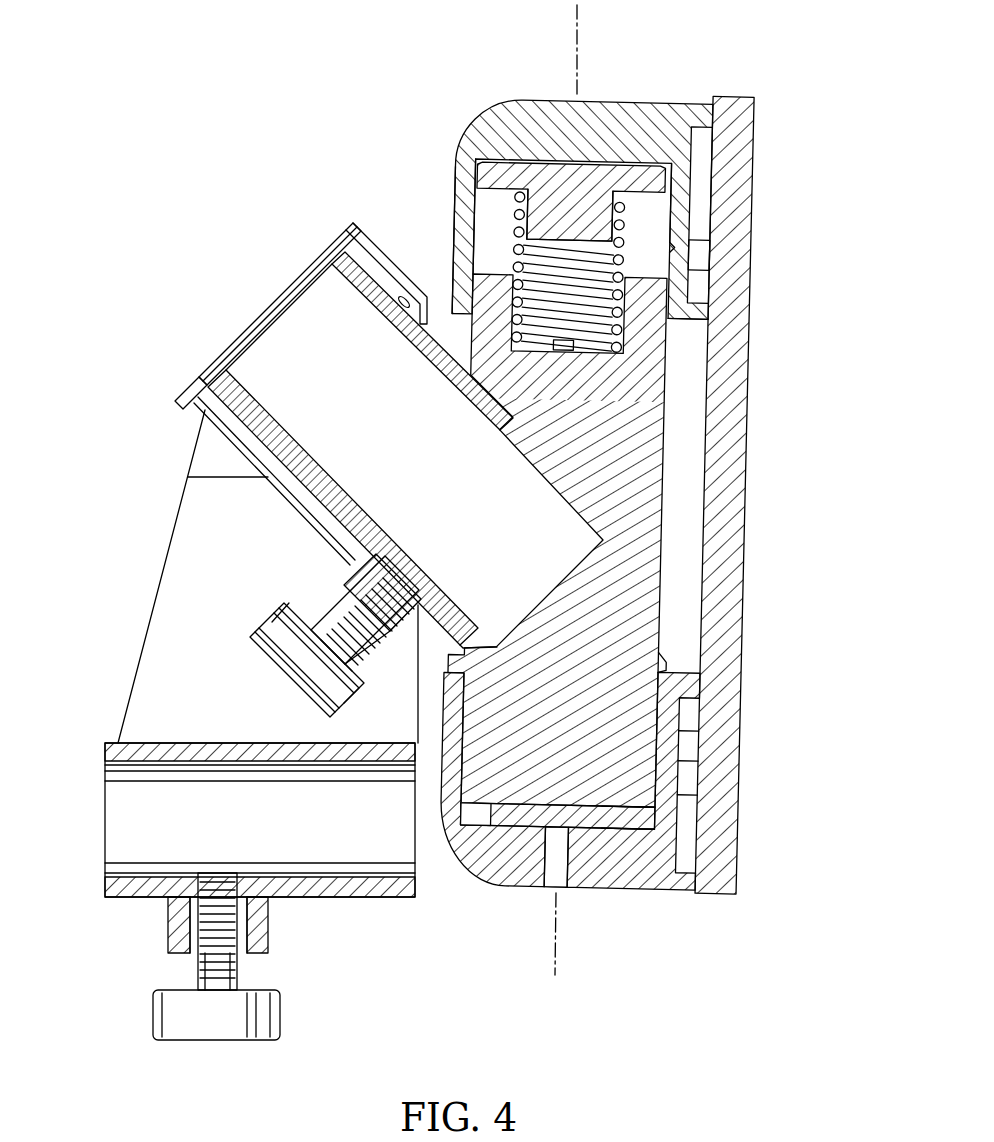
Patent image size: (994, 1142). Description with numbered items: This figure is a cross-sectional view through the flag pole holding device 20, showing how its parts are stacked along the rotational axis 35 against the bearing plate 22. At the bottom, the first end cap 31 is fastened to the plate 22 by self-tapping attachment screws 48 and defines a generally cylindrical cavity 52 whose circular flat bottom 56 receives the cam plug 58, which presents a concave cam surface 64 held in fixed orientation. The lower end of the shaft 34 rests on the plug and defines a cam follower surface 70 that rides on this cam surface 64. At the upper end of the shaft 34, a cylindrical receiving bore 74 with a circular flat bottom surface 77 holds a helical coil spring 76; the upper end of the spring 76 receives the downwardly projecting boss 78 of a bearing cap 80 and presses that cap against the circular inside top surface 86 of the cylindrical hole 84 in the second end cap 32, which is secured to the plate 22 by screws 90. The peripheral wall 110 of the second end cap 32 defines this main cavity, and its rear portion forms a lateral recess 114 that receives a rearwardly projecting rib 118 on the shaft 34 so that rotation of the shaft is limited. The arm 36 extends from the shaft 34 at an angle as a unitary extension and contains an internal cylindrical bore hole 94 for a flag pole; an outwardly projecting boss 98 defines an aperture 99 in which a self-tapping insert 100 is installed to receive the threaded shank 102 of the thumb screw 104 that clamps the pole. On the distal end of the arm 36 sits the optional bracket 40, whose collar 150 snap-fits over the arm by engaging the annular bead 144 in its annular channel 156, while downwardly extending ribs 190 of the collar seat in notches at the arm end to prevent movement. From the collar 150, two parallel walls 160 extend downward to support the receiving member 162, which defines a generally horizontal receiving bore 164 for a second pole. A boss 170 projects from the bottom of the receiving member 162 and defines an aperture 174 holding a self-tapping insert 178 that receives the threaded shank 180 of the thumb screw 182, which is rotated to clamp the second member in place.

The device 20 is at (280, 115).
The plate 22 is at (750, 92).
The first end cap 31 is at (664, 895).
The second end cap 32 is at (681, 98).
The shaft 34 is at (675, 451).
The rotational axis 35 is at (582, 24).
The arm 36 is at (437, 332).
The bracket 40 is at (168, 515).
The attachment screws 48 is at (693, 747).
The cavity 52 is at (665, 656).
The flat bottom 56 is at (622, 813).
The cam plug 58 is at (650, 820).
The cam surface 64 is at (647, 793).
The cam follower surface 70 is at (508, 887).
The receiving bore 74 is at (610, 340).
The helical coil spring 76 is at (520, 262).
The flat bottom surface 77 is at (556, 350).
The boss 78 is at (538, 198).
The bearing cap 80 is at (655, 200).
The cylindrical hole 84 is at (480, 213).
The top surface 86 is at (583, 170).
The screw 90 is at (706, 250).
The bore hole 94 is at (403, 328).
The boss 98 is at (345, 568).
The aperture 99 is at (365, 635).
The self-tapping insert 100 is at (333, 587).
The threaded shank 102 is at (325, 617).
The thumb screw 104 is at (260, 660).
The peripheral wall 110 is at (694, 173).
The lateral recess 114 is at (677, 273).
The rib 118 is at (660, 322).
The annular bead 144 is at (262, 443).
The collar 150 is at (222, 425).
The annular channel 156 is at (262, 437).
The walls 160 is at (192, 560).
The receiving member 162 is at (105, 884).
The receiving bore 164 is at (122, 870).
The boss 170 is at (168, 923).
The aperture 174 is at (237, 957).
The self-tapping insert 178 is at (197, 953).
The threaded shank 180 is at (197, 970).
The thumb screw 182 is at (252, 1045).
The ribs 190 is at (328, 258).